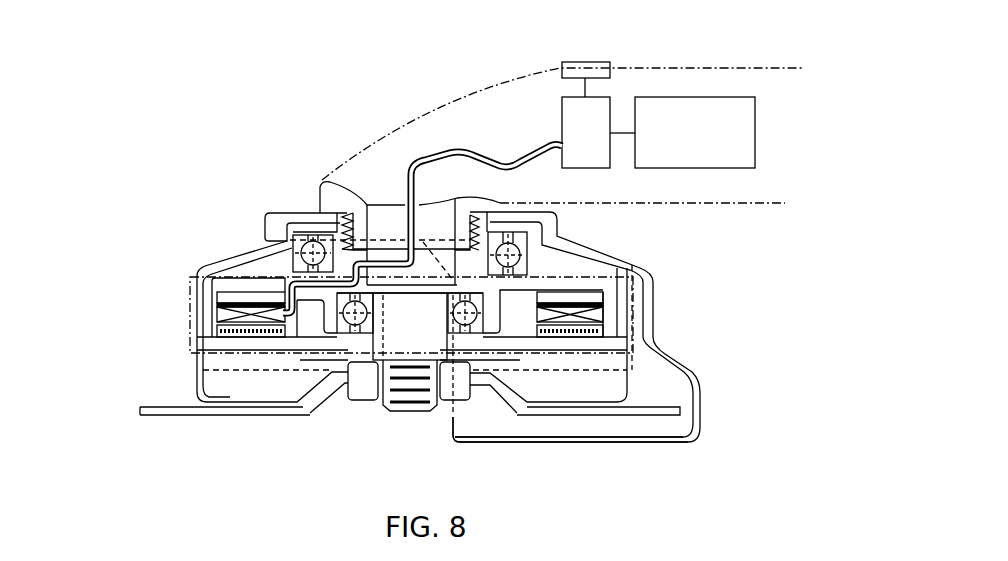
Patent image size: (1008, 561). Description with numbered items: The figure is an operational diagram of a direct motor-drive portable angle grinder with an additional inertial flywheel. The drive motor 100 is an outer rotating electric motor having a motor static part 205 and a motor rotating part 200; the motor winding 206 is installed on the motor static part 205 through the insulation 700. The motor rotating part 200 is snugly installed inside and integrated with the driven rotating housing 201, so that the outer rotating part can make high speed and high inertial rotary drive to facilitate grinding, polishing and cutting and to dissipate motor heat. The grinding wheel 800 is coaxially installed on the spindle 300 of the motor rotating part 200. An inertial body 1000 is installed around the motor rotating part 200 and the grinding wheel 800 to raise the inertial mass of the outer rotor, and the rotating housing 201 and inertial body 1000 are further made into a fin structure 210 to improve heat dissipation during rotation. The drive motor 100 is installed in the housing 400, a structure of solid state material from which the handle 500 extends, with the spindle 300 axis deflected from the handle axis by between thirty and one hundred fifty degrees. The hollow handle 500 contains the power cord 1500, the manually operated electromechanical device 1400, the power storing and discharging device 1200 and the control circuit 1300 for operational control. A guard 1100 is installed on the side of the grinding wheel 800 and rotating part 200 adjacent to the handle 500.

The drive motor 100 is at (633, 297).
The motor rotating part 200 is at (620, 330).
The rotating housing 201 is at (220, 345).
The motor static part 205 is at (558, 293).
The motor winding 206 is at (617, 313).
The fin structure 210 is at (230, 380).
The spindle 300 is at (397, 340).
The housing 400 is at (390, 163).
The handle 500 is at (755, 68).
The insulation 700 is at (248, 300).
The grinding wheel 800 is at (237, 418).
The inertial body 1000 is at (580, 380).
The guard 1100 is at (703, 408).
The power storing and discharging device 1200 is at (757, 147).
The control circuit 1300 is at (557, 113).
The manually operated electromechanical device 1400 is at (583, 62).
The power cord 1500 is at (425, 157).